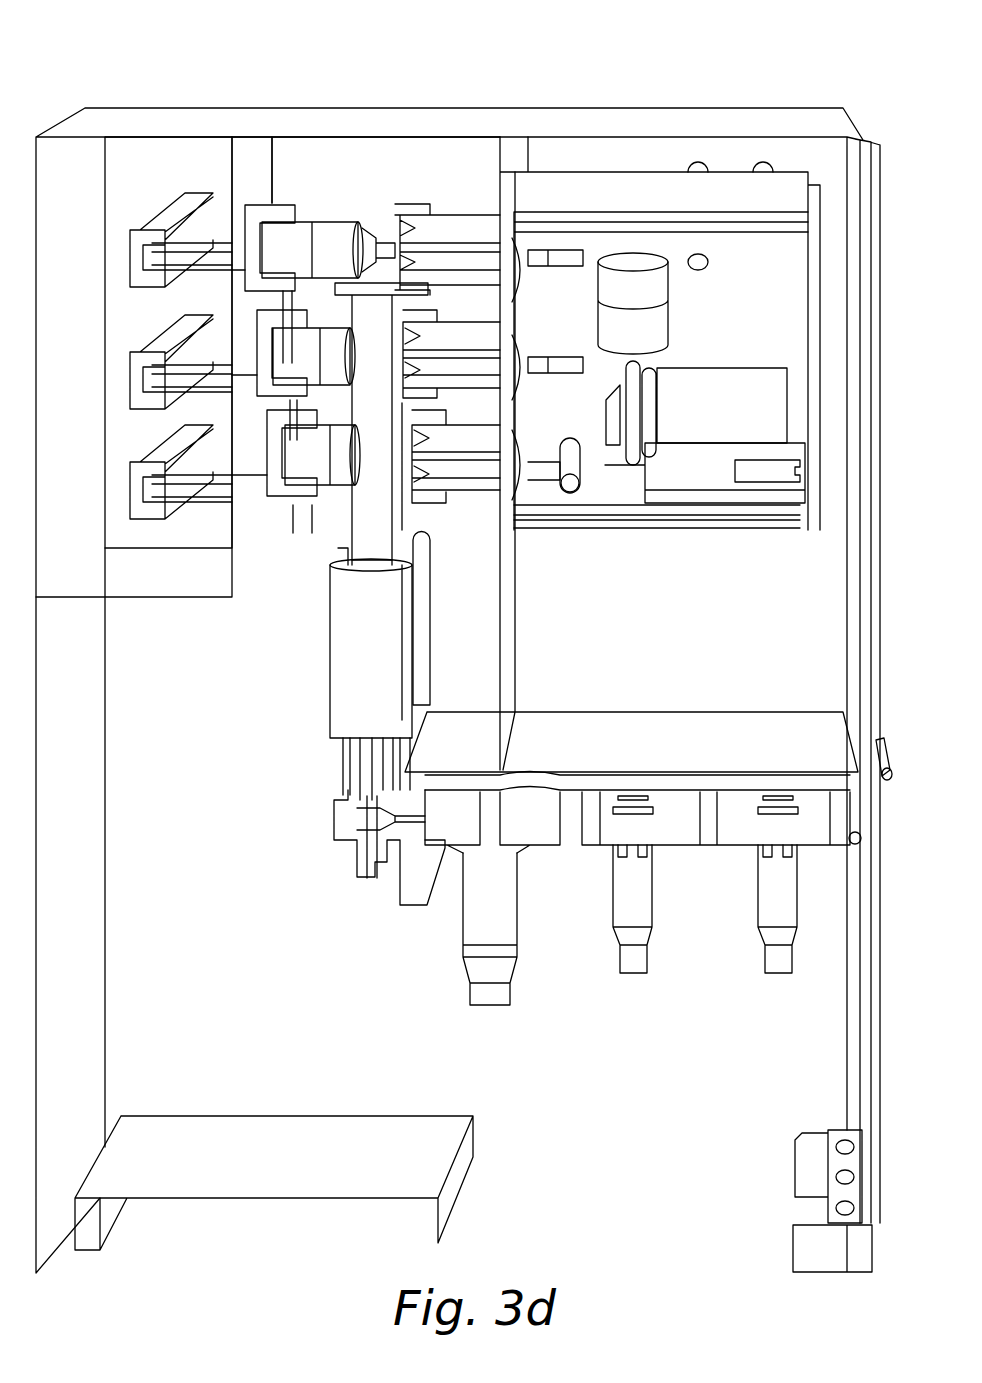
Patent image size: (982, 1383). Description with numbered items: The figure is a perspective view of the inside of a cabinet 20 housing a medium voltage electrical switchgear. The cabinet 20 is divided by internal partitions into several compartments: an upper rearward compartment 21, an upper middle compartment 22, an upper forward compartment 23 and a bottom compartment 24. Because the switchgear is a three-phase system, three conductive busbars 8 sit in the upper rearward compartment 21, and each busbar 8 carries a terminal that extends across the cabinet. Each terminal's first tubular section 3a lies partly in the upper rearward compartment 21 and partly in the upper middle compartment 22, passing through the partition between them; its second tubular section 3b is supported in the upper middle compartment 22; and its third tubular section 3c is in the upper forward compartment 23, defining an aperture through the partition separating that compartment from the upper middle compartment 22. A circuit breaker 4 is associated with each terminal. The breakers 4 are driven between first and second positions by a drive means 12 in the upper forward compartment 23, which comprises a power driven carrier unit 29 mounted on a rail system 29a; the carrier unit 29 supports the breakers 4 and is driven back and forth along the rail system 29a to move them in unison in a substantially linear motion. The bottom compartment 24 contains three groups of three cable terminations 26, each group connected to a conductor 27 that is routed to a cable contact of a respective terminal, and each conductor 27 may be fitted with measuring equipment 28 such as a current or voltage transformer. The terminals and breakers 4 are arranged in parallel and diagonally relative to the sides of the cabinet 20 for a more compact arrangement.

The cabinet 20 is at (285, 105).
The upper rearward compartment 21 is at (84, 190).
The upper middle compartment 22 is at (474, 180).
The upper forward compartment 23 is at (790, 628).
The bottom compartment 24 is at (777, 1047).
The first tubular section 3a is at (272, 225).
The second tubular section 3b is at (390, 205).
The third tubular section 3c is at (512, 323).
The circuit breaker 4 is at (302, 196).
The conductive busbar 8 is at (130, 485).
The drive means 12 is at (695, 297).
The cable termination 26 is at (517, 1003).
The conductor 27 is at (370, 536).
The measuring equipment 28 is at (387, 726).
The power driven carrier unit 29 is at (611, 482).
The rail system 29a is at (726, 508).